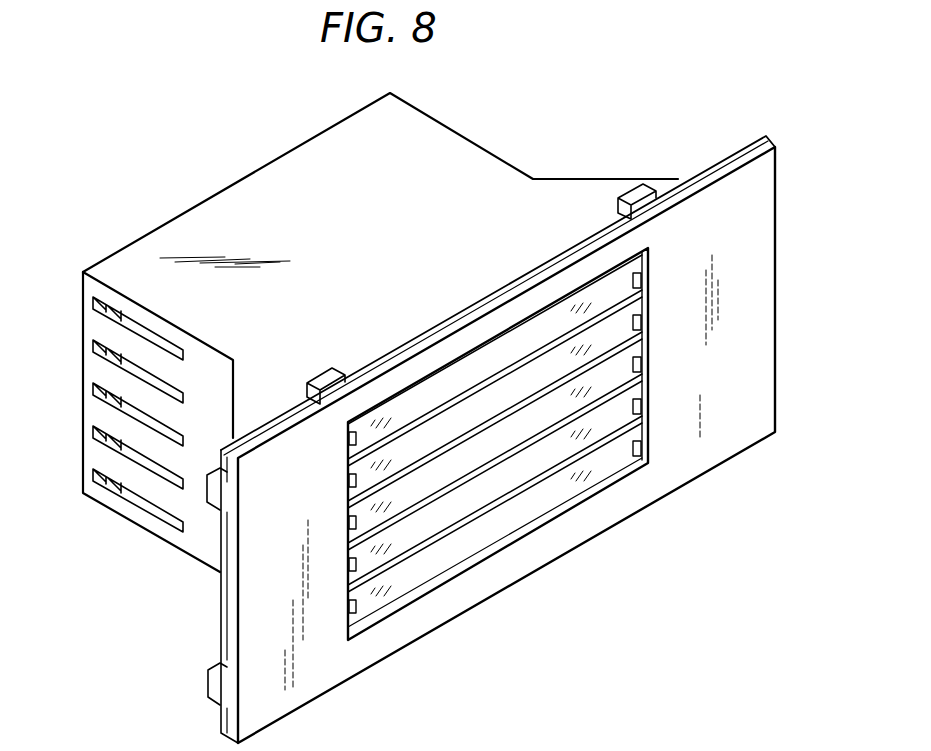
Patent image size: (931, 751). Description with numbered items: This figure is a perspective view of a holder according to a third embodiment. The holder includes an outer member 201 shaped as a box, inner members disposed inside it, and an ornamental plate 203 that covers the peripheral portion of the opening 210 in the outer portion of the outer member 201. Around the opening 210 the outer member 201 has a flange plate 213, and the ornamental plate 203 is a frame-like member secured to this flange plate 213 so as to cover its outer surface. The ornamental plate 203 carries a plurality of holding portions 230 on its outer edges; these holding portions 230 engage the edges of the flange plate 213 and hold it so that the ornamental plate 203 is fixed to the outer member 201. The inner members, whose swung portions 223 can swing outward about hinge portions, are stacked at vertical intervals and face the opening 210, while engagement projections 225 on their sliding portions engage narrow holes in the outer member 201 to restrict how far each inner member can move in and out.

The outer member 201 is at (455, 155).
The ornamental plate 203 is at (757, 333).
The opening 210 is at (493, 525).
The flange plate 213 is at (427, 327).
The swung portions 223 is at (633, 447).
The engagement projections 225 is at (108, 489).
The holding portions 230 is at (643, 197).